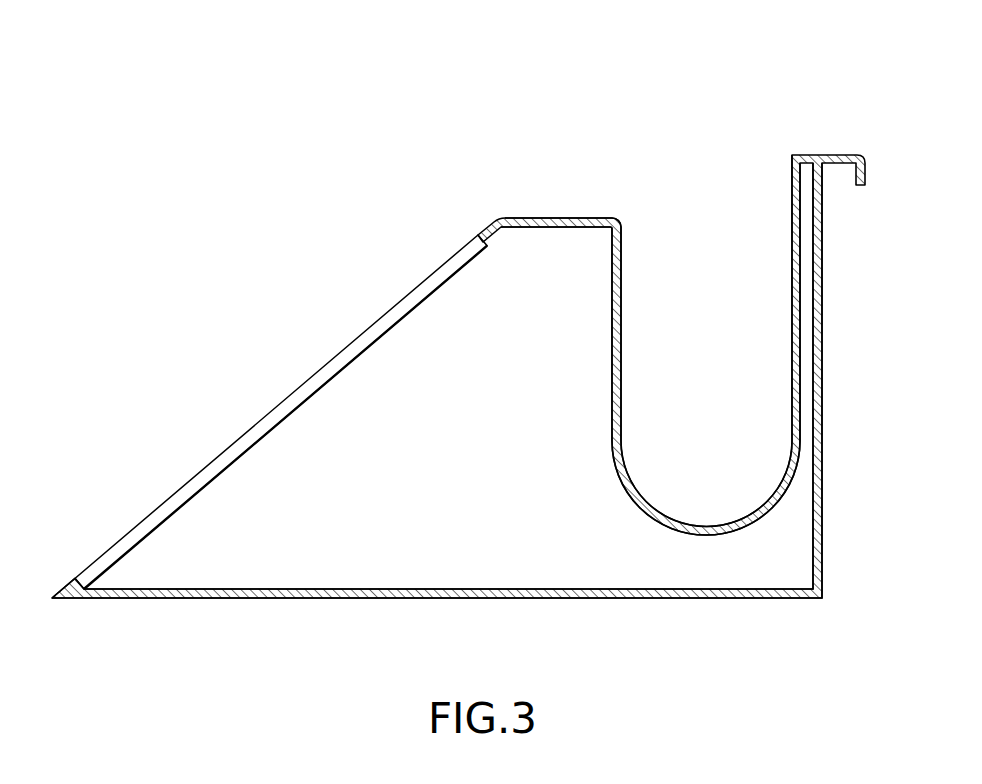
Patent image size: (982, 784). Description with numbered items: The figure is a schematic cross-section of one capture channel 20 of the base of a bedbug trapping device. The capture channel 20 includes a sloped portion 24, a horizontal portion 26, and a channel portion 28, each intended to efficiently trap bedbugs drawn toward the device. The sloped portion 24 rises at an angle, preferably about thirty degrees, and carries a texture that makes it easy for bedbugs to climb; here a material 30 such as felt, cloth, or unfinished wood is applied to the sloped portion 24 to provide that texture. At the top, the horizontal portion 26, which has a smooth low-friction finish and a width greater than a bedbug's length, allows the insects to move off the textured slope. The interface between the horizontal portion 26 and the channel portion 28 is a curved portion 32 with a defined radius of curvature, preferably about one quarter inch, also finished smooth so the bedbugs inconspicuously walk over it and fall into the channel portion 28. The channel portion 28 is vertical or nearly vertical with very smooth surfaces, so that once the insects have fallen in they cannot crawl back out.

The capture channel 20 is at (568, 147).
The sloped portion 24 is at (103, 551).
The horizontal portion 26 is at (538, 228).
The channel portion 28 is at (728, 332).
The material 30 is at (252, 441).
The curved portion 32 is at (622, 220).